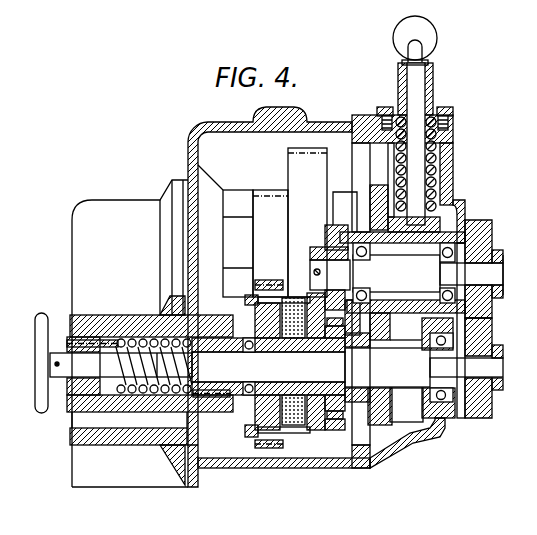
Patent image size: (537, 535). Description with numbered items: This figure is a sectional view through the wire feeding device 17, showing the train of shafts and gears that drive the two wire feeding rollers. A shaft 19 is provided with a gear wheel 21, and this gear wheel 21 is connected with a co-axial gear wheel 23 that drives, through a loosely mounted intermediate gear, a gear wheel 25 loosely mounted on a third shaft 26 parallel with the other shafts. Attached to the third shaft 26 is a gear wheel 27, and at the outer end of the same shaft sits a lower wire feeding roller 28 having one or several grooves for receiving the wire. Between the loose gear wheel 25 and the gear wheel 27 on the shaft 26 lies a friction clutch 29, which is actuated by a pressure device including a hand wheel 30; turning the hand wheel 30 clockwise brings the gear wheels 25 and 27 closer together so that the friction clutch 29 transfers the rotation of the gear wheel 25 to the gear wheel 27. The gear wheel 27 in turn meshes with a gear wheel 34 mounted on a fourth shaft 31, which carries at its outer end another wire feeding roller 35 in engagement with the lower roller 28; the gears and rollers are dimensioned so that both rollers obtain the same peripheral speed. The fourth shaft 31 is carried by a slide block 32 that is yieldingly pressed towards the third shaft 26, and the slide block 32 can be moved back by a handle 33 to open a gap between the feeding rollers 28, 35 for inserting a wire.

The wire feeding device 17 is at (200, 126).
The shaft 19 is at (240, 243).
The gear wheel 21 is at (297, 173).
The gear wheel 23 is at (278, 203).
The gear wheel 25 is at (257, 415).
The third shaft 26 is at (276, 367).
The gear wheel 27 is at (336, 420).
The lower wire feeding roller 28 is at (478, 422).
The friction clutch 29 is at (293, 445).
The hand wheel 30 is at (42, 414).
The fourth shaft 31 is at (428, 275).
The slide block 32 is at (380, 200).
The handle 33 is at (438, 40).
The gear wheel 34 is at (340, 230).
The wire feeding roller 35 is at (478, 233).